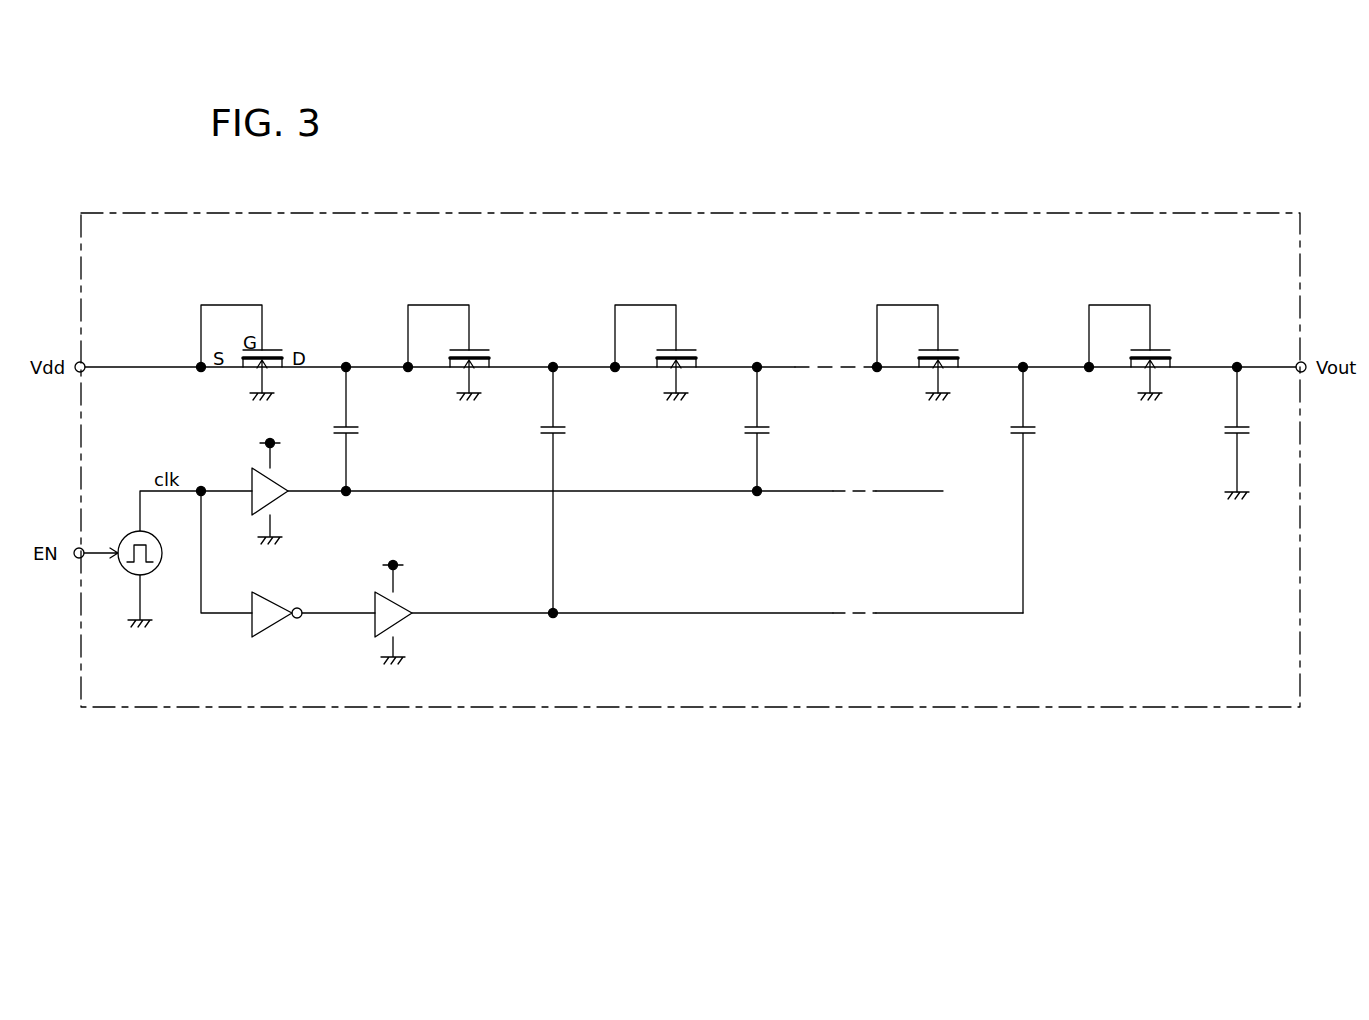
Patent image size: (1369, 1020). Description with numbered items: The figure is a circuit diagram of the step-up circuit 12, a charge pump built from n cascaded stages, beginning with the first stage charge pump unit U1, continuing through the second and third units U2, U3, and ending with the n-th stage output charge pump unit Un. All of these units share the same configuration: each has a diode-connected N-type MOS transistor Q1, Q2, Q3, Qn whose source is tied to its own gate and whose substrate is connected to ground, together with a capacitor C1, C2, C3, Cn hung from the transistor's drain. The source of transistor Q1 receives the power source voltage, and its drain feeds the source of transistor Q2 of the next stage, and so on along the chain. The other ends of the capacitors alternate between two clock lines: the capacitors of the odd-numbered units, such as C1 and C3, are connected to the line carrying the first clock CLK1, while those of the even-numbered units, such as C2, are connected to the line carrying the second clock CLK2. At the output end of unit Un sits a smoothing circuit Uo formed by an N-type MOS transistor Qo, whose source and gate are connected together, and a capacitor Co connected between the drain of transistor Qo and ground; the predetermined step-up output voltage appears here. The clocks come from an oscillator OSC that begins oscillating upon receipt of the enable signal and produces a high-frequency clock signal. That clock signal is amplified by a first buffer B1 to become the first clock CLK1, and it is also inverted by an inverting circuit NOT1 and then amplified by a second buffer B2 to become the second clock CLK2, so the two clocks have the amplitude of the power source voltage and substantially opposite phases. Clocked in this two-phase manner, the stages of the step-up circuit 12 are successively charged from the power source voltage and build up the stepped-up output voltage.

The step-up circuit 12 is at (566, 212).
The first stage charge pump unit U1 is at (357, 296).
The second stage charge pump unit U2 is at (560, 296).
The third stage charge pump unit U3 is at (768, 296).
The n-th stage output charge pump unit Un is at (1032, 296).
The smoothing circuit Uo is at (1247, 296).
The N-type MOS transistor Q1 is at (268, 350).
The N-type MOS transistor Q2 is at (475, 350).
The N-type MOS transistor Q3 is at (682, 350).
The N-type MOS transistor Qn is at (944, 350).
The N-type MOS transistor Qo is at (1156, 350).
The capacitor C1 is at (349, 427).
The capacitor C2 is at (556, 427).
The capacitor C3 is at (760, 427).
The capacitor Cn is at (1026, 427).
The capacitor Co is at (1240, 427).
The oscillator OSC is at (128, 530).
The first buffer B1 is at (276, 505).
The second buffer B2 is at (400, 627).
The inverting circuit NOT1 is at (280, 628).
The first clock CLK1 is at (482, 493).
The second clock CLK2 is at (495, 615).